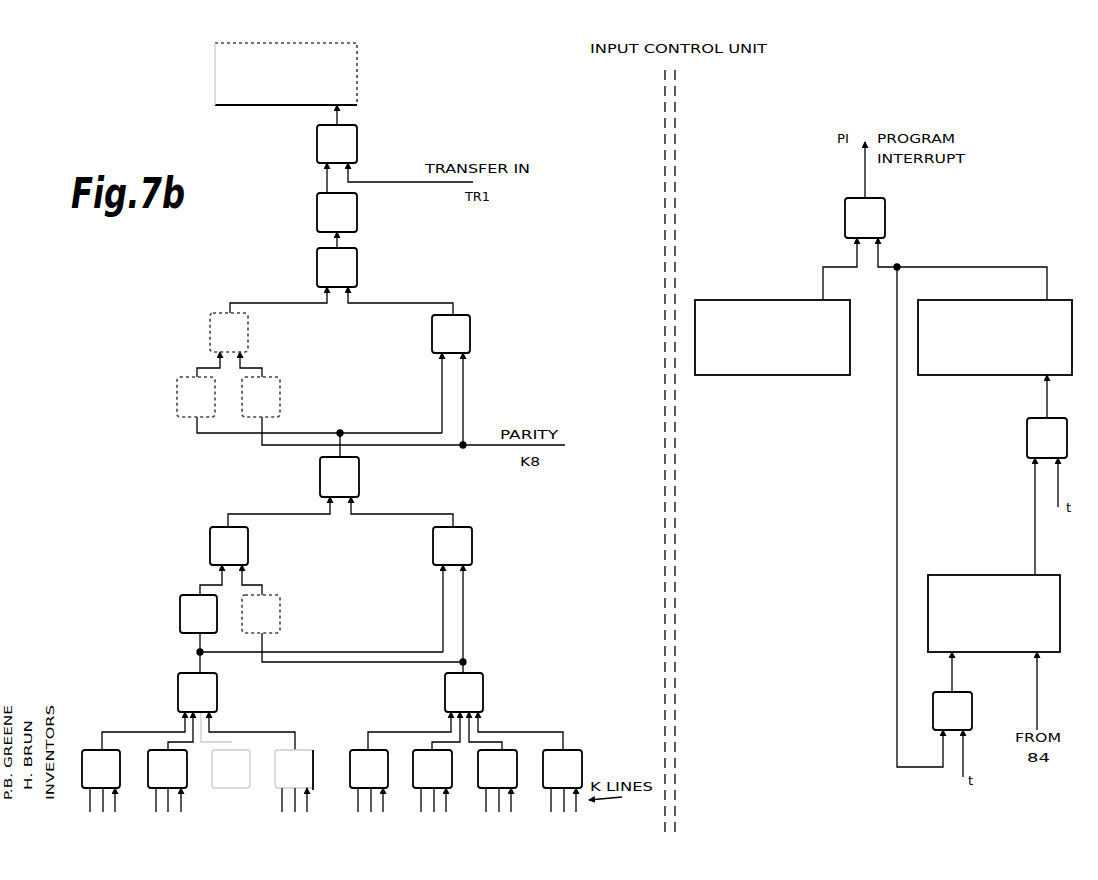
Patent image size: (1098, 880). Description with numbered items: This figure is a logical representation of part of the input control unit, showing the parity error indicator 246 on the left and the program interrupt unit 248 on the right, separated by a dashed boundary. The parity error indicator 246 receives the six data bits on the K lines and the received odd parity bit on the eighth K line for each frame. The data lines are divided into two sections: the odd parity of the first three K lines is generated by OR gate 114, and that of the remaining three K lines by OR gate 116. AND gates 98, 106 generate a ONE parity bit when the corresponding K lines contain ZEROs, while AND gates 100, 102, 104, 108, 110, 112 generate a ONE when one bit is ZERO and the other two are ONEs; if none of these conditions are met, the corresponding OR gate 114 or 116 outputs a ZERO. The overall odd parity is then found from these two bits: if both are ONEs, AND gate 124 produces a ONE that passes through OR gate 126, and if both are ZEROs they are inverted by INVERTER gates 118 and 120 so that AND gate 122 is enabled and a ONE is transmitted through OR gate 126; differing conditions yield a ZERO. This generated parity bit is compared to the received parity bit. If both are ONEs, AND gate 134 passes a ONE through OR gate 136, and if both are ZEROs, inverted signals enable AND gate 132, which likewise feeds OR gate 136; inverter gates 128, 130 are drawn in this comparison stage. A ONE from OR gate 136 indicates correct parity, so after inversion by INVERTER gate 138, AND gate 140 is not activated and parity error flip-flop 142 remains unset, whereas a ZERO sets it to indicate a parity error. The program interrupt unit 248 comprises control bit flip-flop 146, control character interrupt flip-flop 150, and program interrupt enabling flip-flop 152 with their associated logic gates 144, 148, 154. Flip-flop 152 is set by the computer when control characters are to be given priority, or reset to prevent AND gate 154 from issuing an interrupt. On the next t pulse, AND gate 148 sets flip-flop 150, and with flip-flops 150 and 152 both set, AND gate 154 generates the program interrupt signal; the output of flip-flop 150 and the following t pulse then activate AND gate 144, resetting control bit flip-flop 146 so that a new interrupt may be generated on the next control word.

The AND gate 98 is at (90, 748).
The AND gate 100 is at (150, 760).
The AND gate 102 is at (245, 777).
The AND gate 104 is at (300, 748).
The AND gate 106 is at (350, 768).
The AND gate 108 is at (413, 764).
The AND gate 110 is at (518, 764).
The AND gate 112 is at (583, 757).
The OR gate 114 is at (220, 692).
The OR gate 116 is at (443, 692).
The INVERTER gate 118 is at (178, 616).
The INVERTER gate 120 is at (285, 612).
The AND gate 122 is at (208, 552).
The AND gate 124 is at (431, 545).
The OR gate 126 is at (318, 476).
The inverter 128 is at (175, 397).
The inverter 130 is at (282, 393).
The AND gate 132 is at (252, 338).
The AND gate 134 is at (472, 334).
The OR gate 136 is at (358, 263).
The INVERTER gate 138 is at (358, 212).
The AND gate 140 is at (360, 141).
The parity error flip-flop 142 is at (360, 82).
The AND gate 144 is at (972, 705).
The control bit flip-flop 146 is at (995, 573).
The AND gate 148 is at (1027, 440).
The control character interrupt flip-flop 150 is at (985, 378).
The program interrupt enabling flip-flop 152 is at (782, 378).
The AND gate 154 is at (887, 210).
The parity error indicator 246 is at (660, 620).
The program interrupt unit 248 is at (677, 418).